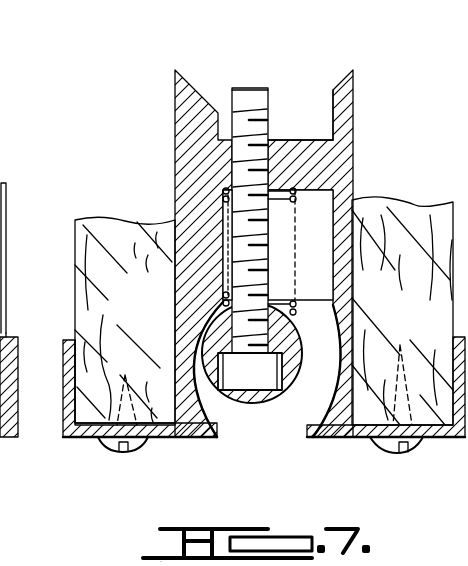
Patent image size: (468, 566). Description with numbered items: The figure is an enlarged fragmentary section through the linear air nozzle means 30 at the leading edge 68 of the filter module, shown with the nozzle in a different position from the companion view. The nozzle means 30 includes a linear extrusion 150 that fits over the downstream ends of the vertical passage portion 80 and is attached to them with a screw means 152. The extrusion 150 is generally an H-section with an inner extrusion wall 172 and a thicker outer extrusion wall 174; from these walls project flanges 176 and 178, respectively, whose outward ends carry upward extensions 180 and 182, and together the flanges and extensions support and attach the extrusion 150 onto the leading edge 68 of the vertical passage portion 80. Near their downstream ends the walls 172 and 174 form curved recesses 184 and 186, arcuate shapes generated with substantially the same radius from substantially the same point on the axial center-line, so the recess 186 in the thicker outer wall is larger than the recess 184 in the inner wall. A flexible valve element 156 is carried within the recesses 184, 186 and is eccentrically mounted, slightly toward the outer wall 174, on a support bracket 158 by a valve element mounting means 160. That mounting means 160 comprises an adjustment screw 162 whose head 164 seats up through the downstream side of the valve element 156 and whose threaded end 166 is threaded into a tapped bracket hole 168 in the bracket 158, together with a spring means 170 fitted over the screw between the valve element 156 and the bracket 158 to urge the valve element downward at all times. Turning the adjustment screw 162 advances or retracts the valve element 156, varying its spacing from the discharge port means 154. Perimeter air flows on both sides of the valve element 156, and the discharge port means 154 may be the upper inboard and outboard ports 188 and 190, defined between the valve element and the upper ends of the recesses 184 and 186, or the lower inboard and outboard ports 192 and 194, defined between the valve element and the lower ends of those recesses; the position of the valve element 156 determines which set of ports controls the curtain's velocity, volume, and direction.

The linear air nozzle means 30 is at (150, 110).
The leading edge 68 is at (192, 455).
The vertical passage portion 80 is at (428, 198).
The linear extrusion 150 is at (205, 88).
The screw means 152 is at (118, 455).
The discharge port means 154 is at (230, 448).
The flexible valve element 156 is at (278, 386).
The support bracket 158 is at (294, 140).
The valve element mounting means 160 is at (280, 243).
The adjustment screw 162 is at (262, 226).
The head 164 is at (255, 380).
The threaded end 166 is at (252, 100).
The tapped bracket hole 168 is at (263, 142).
The spring means 170 is at (313, 336).
The inner extrusion wall 172 is at (348, 220).
The outer extrusion wall 174 is at (178, 232).
The flange 176 is at (365, 440).
The flange 178 is at (97, 437).
The extension 180 is at (460, 350).
The extension 182 is at (66, 382).
The curved recess 184 is at (330, 370).
The curved recess 186 is at (193, 350).
The upper inboard port 188 is at (355, 295).
The upper outboard port 190 is at (218, 302).
The lower inboard port 192 is at (315, 410).
The lower outboard port 194 is at (182, 376).